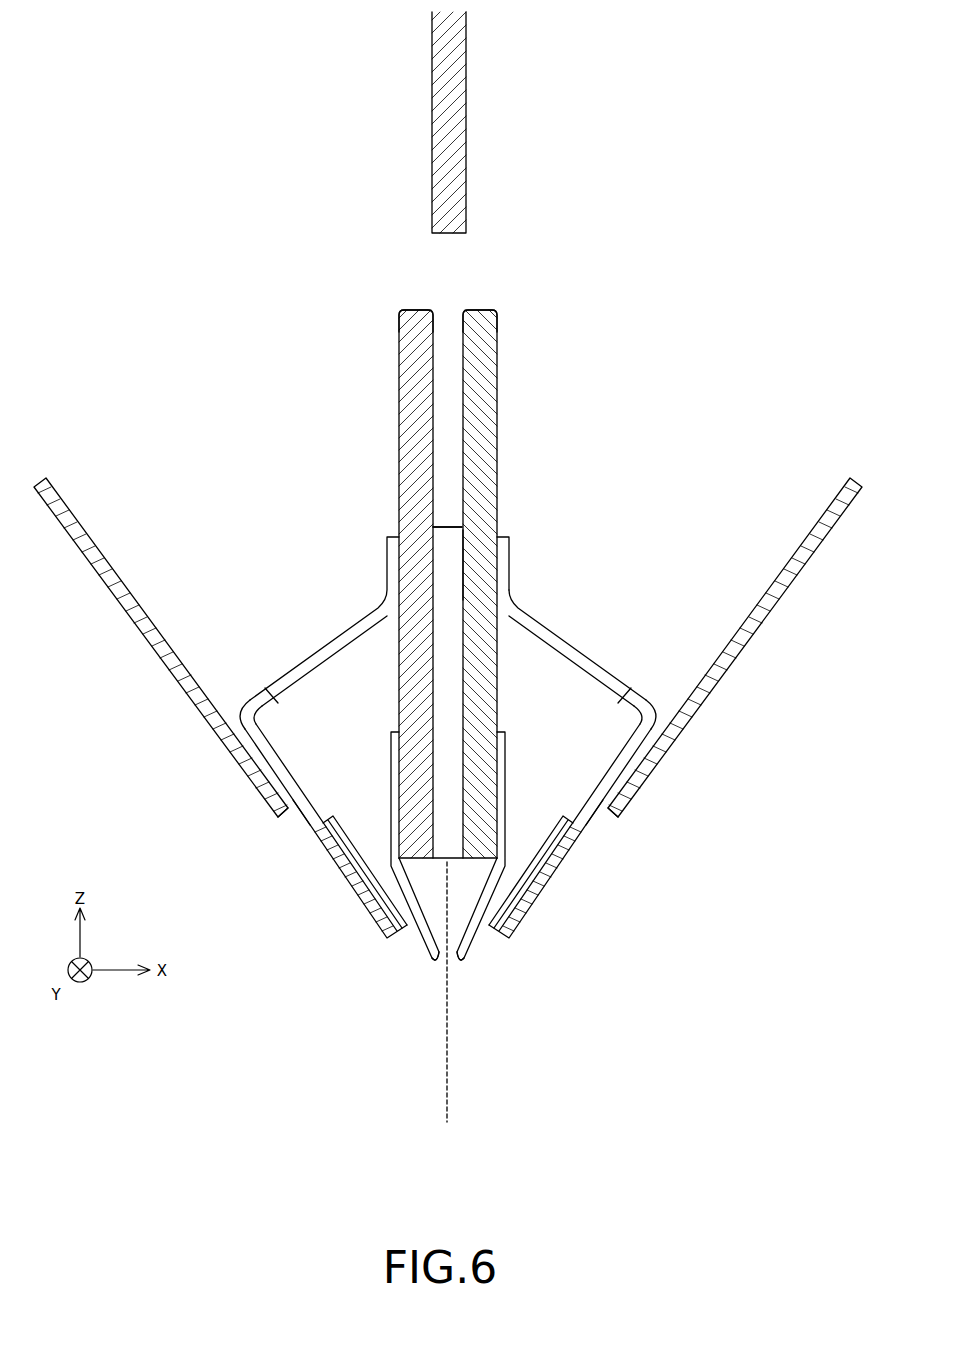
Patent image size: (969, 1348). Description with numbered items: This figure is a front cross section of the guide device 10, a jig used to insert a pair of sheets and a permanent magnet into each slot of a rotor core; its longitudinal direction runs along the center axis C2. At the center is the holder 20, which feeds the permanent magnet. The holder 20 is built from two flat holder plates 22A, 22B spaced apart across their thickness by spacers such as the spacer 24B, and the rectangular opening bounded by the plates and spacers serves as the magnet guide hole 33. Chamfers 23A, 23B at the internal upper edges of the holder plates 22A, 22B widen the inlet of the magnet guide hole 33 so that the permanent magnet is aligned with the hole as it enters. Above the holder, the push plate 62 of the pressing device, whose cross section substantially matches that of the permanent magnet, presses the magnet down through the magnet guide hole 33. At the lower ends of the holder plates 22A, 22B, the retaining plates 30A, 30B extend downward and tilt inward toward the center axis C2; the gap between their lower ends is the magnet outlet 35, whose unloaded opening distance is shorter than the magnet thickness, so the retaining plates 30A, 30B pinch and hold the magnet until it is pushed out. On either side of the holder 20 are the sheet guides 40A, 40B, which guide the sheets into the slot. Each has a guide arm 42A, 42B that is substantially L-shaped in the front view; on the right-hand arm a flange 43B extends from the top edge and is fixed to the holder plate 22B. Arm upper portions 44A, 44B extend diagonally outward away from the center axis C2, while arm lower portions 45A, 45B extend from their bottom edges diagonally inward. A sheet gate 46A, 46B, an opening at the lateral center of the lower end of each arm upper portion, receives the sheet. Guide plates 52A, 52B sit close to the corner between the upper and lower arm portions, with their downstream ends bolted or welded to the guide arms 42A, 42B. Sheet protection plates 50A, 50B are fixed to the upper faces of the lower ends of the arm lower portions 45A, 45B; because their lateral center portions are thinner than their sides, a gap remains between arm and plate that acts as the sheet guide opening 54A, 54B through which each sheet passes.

The guide device 10 is at (178, 190).
The push plate 62 is at (468, 152).
The holder 20 is at (520, 424).
The holder plate 22A is at (418, 348).
The holder plate 22B is at (478, 348).
The chamfer 23A is at (425, 306).
The chamfer 23B is at (470, 306).
The magnet guide hole 33 is at (446, 438).
The spacer 24B is at (450, 546).
The flange 43B is at (511, 560).
The guide arm 42A is at (337, 632).
The guide arm 42B is at (559, 632).
The arm upper portion 44A is at (287, 672).
The arm upper portion 44B is at (609, 672).
The sheet gate 46A is at (243, 703).
The sheet gate 46B is at (653, 703).
The sheet protection plate 50A is at (338, 823).
The sheet protection plate 50B is at (558, 823).
The guide plate 52A is at (177, 677).
The guide plate 52B is at (719, 677).
The sheet guide opening 54A is at (345, 880).
The sheet guide opening 54B is at (551, 880).
The sheet guide 40A is at (206, 795).
The sheet guide 40B is at (690, 795).
The arm lower portion 45A is at (304, 830).
The arm lower portion 45B is at (592, 830).
The retaining plate 30A is at (435, 967).
The retaining plate 30B is at (459, 967).
The magnet outlet 35 is at (443, 975).
The center axis C2 is at (447, 1006).